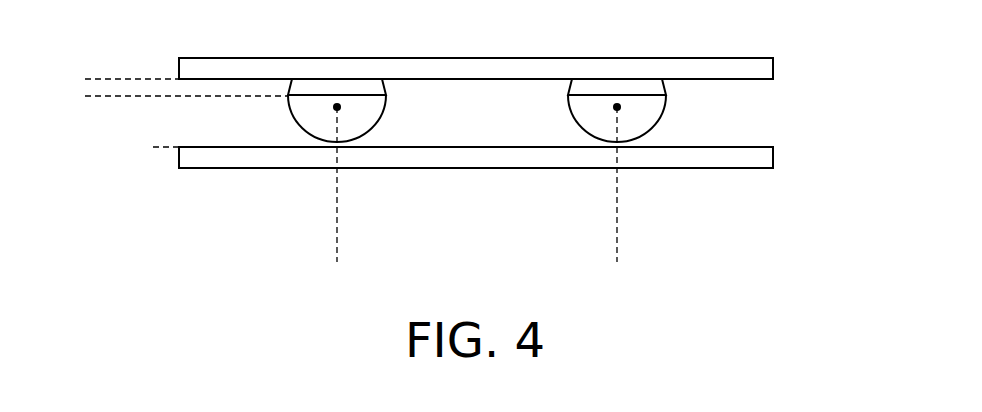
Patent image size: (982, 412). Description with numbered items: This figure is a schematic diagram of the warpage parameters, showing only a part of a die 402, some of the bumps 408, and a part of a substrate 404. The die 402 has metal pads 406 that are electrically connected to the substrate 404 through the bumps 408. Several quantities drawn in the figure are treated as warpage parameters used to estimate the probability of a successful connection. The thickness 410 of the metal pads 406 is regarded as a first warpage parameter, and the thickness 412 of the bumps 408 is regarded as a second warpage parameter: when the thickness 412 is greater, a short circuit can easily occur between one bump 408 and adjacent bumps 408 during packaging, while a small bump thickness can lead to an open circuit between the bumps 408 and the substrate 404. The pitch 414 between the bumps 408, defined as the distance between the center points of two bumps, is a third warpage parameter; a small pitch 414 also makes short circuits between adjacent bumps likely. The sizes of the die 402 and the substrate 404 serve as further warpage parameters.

The die 402 is at (762, 72).
The substrate 404 is at (762, 159).
The metal pads 406 is at (336, 86).
The bumps 408 is at (373, 118).
The thickness of the metal pads 410 is at (91, 35).
The thickness of the bumps 412 is at (159, 96).
The pitch between the bumps 414 is at (617, 255).